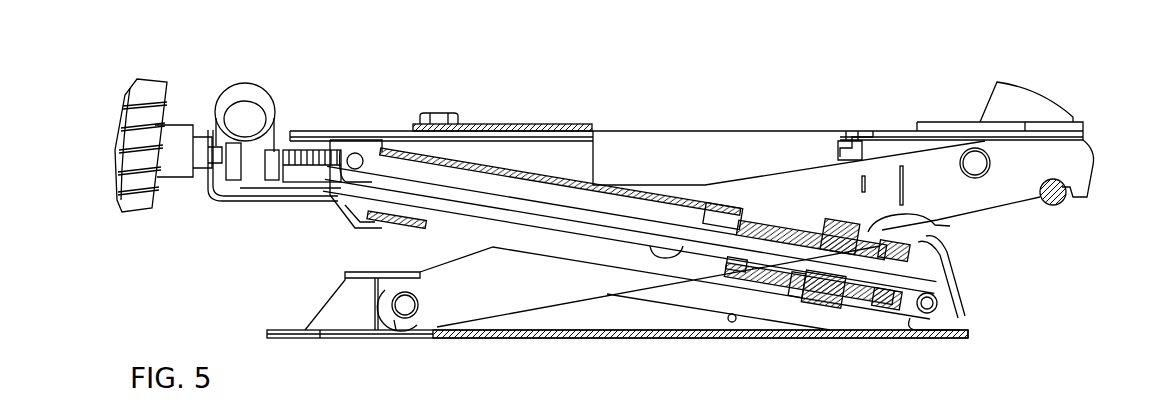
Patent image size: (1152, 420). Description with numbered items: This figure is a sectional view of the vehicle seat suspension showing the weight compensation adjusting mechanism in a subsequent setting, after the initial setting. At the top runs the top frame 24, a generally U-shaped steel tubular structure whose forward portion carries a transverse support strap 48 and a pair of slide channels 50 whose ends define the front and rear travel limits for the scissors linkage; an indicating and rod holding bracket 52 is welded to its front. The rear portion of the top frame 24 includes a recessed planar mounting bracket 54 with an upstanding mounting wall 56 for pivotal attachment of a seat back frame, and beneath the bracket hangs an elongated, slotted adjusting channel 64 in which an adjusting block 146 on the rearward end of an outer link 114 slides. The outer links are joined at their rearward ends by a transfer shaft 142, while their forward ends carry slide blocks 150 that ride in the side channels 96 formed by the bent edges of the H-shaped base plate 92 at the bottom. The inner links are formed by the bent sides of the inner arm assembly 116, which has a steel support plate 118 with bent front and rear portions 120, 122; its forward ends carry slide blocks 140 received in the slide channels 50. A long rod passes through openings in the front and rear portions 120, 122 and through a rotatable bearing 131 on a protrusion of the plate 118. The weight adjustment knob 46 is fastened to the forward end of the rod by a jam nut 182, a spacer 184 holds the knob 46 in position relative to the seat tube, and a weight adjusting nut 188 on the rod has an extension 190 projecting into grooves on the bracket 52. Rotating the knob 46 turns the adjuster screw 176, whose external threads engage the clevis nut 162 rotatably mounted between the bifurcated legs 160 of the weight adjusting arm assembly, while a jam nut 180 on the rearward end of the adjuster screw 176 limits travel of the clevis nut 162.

The top frame 24 is at (256, 86).
The weight adjustment knob 46 is at (124, 126).
The transverse support strap 48 is at (515, 122).
The slide channels 50 is at (590, 143).
The indicating and rod holding bracket 52 is at (293, 184).
The mounting bracket 54 is at (948, 127).
The mounting walls 56 is at (1020, 100).
The adjusting channel 64 is at (1090, 170).
The base plate 92 is at (540, 341).
The side channels 96 is at (330, 312).
The outer link 114 is at (890, 170).
The inner arm assembly 116 is at (728, 206).
The support plate 118 is at (657, 186).
The front portion 120 is at (360, 214).
The rear portion 122 is at (937, 260).
The rotatable bearing 131 is at (750, 288).
The slide blocks 140 is at (380, 142).
The transfer shaft 142 is at (1056, 205).
The adjusting blocks 146 is at (1087, 150).
The slide blocks 150 is at (410, 330).
The bifurcated legs 160 is at (823, 305).
The clevis nut 162 is at (840, 310).
The adjuster screw 176 is at (781, 275).
The jam nut 180 is at (915, 233).
The jam nut 182 is at (205, 135).
The spacer 184 is at (233, 182).
The weight adjusting nut 188 is at (285, 133).
The extension 190 is at (270, 182).